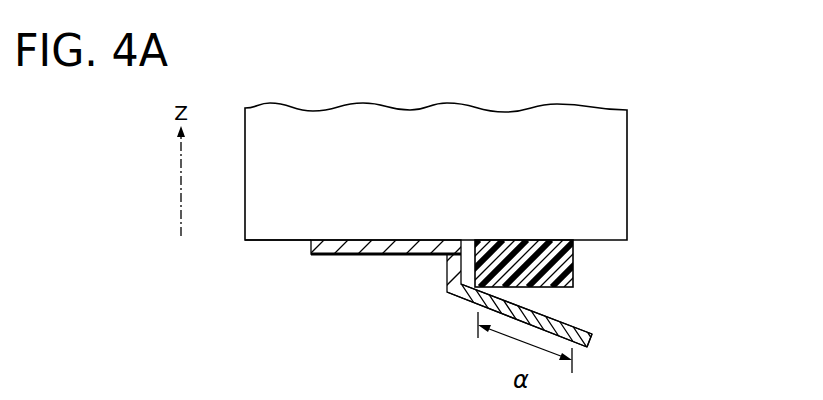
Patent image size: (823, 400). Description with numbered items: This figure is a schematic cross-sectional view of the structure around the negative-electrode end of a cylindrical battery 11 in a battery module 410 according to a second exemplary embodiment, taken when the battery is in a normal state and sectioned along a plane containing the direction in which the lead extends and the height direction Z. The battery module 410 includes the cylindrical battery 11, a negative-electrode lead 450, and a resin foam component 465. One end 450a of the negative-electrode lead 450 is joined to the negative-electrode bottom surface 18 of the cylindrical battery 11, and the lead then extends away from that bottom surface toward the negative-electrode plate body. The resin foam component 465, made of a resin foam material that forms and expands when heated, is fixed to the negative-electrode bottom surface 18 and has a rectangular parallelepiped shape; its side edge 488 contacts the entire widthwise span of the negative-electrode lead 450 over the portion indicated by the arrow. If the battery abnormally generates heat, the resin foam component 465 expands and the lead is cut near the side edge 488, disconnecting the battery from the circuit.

The cylindrical battery 11 is at (436, 133).
The battery module 410 is at (410, 98).
The negative-electrode bottom surface 18 is at (258, 243).
The negative-electrode lead 450 is at (422, 301).
The one end of negative-electrode lead 450a is at (384, 257).
The resin foam component 465 is at (574, 262).
The side edge 488 is at (472, 297).